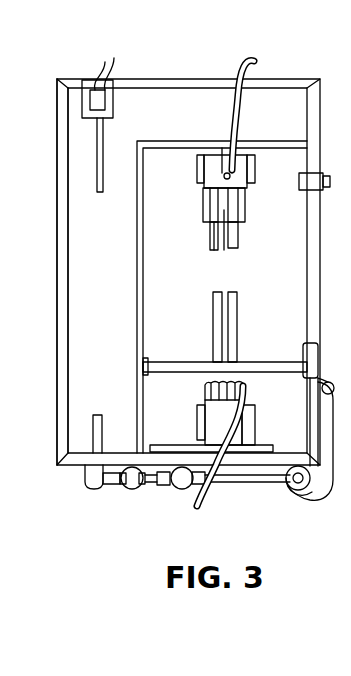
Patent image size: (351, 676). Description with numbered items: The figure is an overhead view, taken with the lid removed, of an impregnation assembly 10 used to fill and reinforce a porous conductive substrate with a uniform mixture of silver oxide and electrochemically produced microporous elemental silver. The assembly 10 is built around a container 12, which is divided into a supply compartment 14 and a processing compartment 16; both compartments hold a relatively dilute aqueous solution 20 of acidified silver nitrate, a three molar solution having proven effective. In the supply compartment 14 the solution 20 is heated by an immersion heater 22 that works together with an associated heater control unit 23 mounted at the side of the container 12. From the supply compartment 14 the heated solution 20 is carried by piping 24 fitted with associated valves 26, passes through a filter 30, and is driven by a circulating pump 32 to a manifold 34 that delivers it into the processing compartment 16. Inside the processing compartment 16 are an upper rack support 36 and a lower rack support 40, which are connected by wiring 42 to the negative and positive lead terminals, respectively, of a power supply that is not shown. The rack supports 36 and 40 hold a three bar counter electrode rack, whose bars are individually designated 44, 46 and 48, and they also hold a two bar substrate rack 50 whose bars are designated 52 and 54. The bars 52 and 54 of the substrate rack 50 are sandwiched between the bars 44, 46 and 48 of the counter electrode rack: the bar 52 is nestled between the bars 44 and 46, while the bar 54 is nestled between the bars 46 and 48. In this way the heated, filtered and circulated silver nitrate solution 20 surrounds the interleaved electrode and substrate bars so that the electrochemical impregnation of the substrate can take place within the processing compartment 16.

The impregnation assembly 10 is at (186, 43).
The container 12 is at (189, 79).
The supply compartment 14 is at (88, 326).
The processing compartment 16 is at (290, 294).
The aqueous solution 20 is at (108, 272).
The immersion heater 22 is at (116, 60).
The heater control unit 23 is at (299, 180).
The piping 24 is at (190, 362).
The valves 26 is at (305, 400).
The filter 30 is at (184, 489).
The circulating pump 32 is at (305, 500).
The manifold 34 is at (237, 336).
The rack support 36 is at (236, 165).
The rack support 40 is at (205, 415).
The wiring 42 is at (256, 64).
The counter electrode rack bar 44 is at (203, 200).
The counter electrode rack bar 46 is at (224, 250).
The counter electrode rack bar 48 is at (245, 200).
The substrate rack 50 is at (208, 236).
The substrate rack bar 52 is at (215, 248).
The substrate rack bar 54 is at (240, 243).